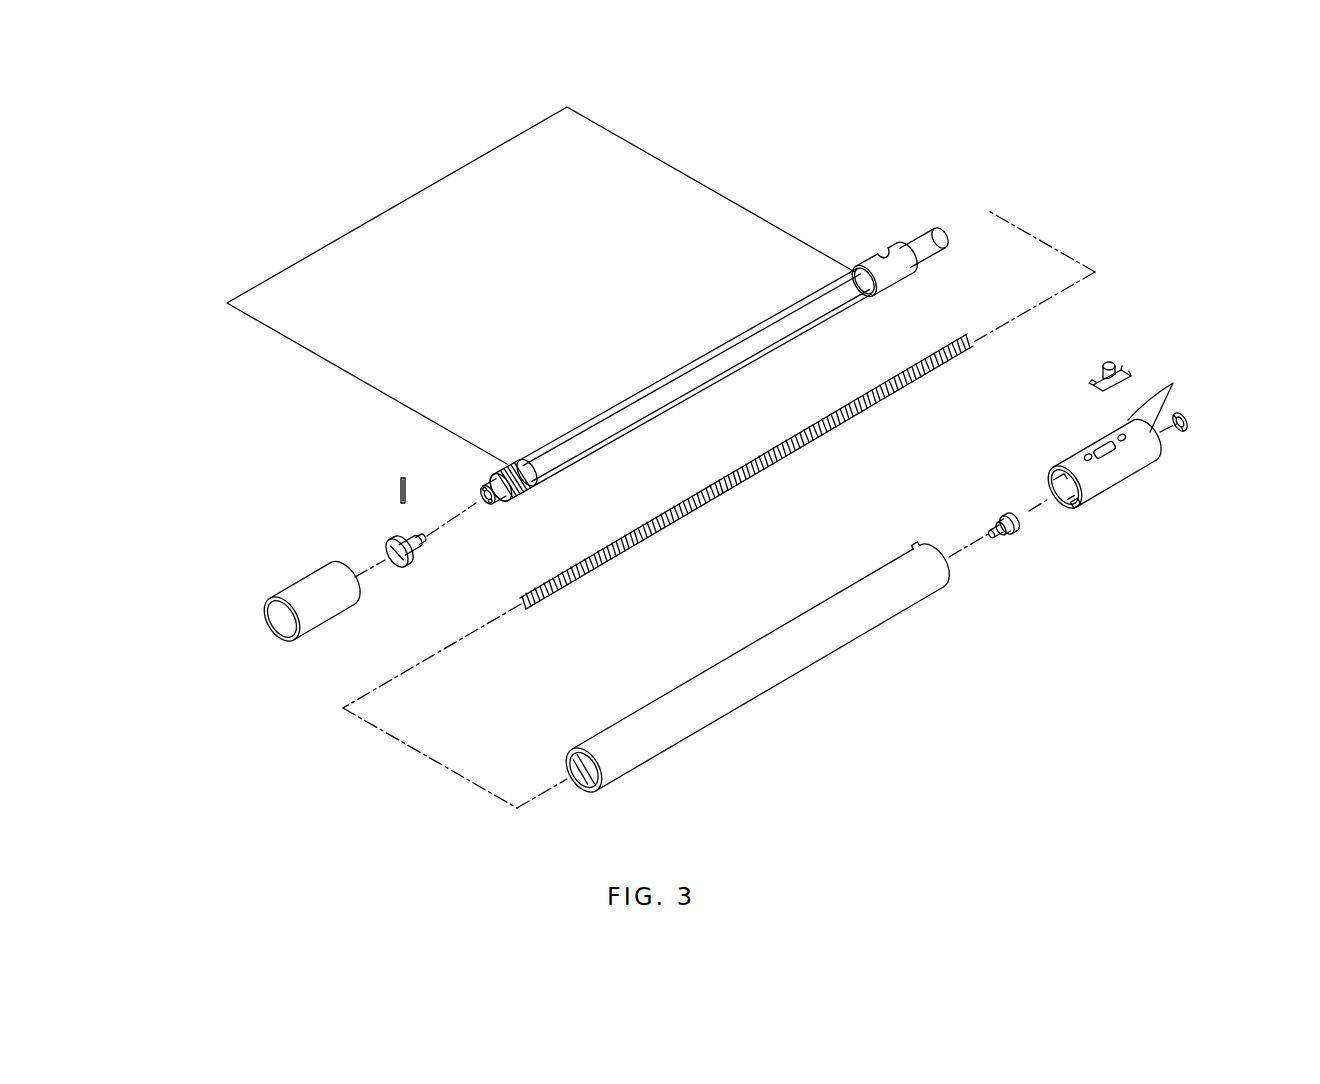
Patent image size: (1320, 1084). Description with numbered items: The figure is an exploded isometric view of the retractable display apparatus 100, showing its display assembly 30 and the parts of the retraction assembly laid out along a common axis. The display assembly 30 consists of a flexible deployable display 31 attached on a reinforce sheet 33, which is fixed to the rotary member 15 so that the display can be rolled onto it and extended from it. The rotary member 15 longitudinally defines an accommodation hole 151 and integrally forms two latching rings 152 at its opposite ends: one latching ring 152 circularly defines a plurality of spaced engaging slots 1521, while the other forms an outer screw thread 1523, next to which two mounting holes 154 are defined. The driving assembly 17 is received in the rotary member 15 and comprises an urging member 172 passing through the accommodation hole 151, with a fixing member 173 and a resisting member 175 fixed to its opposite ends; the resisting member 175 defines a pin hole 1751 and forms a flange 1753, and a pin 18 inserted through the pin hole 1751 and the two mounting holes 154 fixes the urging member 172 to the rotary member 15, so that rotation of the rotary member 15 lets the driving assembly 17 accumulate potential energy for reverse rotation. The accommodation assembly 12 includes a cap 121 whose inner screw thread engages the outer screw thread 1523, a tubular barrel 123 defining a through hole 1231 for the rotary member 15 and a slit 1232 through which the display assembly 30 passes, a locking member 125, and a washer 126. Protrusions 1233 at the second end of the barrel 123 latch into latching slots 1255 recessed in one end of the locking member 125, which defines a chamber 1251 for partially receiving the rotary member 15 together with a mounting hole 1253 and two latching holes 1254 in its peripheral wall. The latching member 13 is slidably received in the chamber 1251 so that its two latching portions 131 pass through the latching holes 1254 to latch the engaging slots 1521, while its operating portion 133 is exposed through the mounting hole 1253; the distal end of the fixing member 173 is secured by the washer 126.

The retractable display apparatus 100 is at (431, 134).
The display assembly 30 is at (865, 196).
The deployable display 31 is at (763, 243).
The reinforce sheet 33 is at (827, 287).
The rotary member 15 is at (688, 368).
The latching ring 152 is at (932, 281).
The engaging slot 1521 is at (913, 257).
The outer screw thread 1523 is at (523, 505).
The mounting hole 154 is at (487, 482).
The accommodation hole 151 is at (480, 514).
The pin 18 is at (399, 488).
The resisting member 175 is at (285, 478).
The pin hole 1751 is at (405, 543).
The flange 1753 is at (390, 552).
The cap 121 is at (300, 593).
The driving assembly 17 is at (882, 423).
The urging member 172 is at (951, 372).
The fixing member 173 is at (1010, 513).
The latching member 13 is at (1118, 348).
The latching portion 131 is at (1123, 368).
The operating portion 133 is at (1107, 362).
The accommodation assembly 12 is at (1246, 536).
The barrel 123 is at (735, 663).
The through hole 1231 is at (577, 778).
The slit 1232 is at (563, 758).
The protrusion 1233 is at (938, 545).
The locking member 125 is at (1100, 468).
The chamber 1251 is at (1063, 483).
The mounting hole 1253 is at (1106, 438).
The latching hole 1254 is at (1173, 383).
The latching slot 1255 is at (1068, 510).
The washer 126 is at (1183, 440).